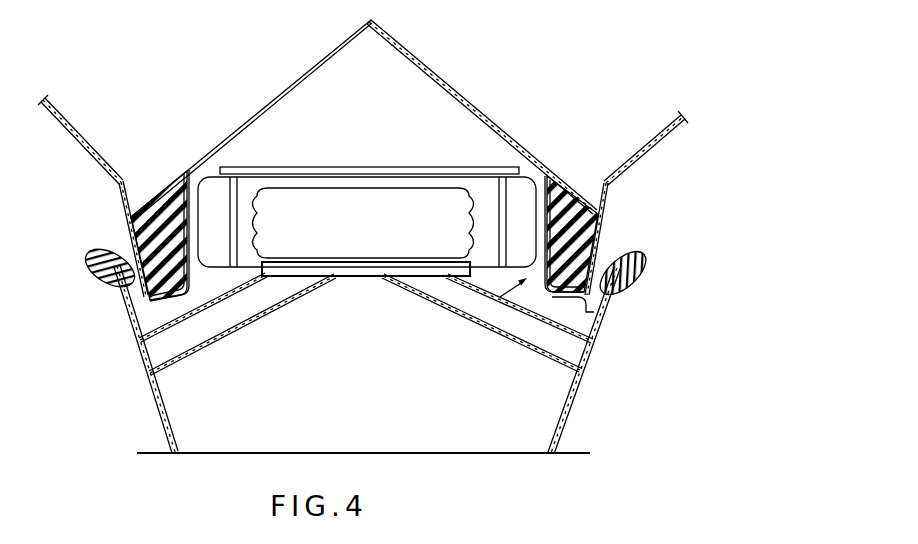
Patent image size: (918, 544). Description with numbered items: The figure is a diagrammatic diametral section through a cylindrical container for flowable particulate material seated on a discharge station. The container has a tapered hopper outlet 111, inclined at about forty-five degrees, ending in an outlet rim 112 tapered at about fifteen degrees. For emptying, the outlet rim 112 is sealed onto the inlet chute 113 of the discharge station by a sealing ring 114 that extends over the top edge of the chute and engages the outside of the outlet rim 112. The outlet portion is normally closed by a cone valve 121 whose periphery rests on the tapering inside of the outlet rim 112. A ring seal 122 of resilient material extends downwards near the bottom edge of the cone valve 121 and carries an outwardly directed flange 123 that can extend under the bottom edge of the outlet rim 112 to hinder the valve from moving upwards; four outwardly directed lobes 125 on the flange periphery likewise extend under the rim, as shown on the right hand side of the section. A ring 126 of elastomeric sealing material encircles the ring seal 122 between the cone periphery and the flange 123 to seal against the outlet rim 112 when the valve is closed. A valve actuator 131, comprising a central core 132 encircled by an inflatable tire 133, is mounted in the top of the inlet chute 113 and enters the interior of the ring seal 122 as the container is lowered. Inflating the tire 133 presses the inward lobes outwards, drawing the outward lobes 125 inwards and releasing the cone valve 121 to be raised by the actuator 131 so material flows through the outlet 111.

The hopper outlet 111 is at (77, 156).
The outlet rim 112 is at (127, 230).
The inlet chute 113 is at (167, 410).
The sealing ring 114 is at (92, 290).
The cone valve 121 is at (424, 62).
The ring seal 122 is at (482, 318).
The outwardly directed flange 123 is at (513, 330).
The outwardly directed lobes 125 is at (603, 310).
The ring of elastomeric sealing material 126 is at (597, 226).
The valve actuator 131 is at (379, 237).
The central core 132 is at (290, 296).
The inflatable tire 133 is at (213, 203).